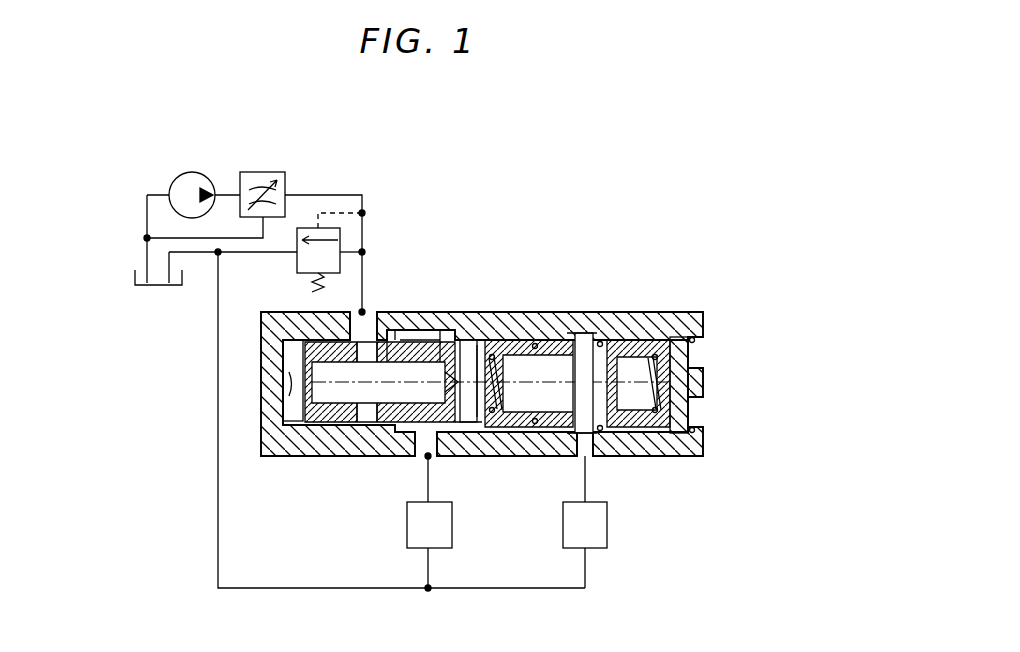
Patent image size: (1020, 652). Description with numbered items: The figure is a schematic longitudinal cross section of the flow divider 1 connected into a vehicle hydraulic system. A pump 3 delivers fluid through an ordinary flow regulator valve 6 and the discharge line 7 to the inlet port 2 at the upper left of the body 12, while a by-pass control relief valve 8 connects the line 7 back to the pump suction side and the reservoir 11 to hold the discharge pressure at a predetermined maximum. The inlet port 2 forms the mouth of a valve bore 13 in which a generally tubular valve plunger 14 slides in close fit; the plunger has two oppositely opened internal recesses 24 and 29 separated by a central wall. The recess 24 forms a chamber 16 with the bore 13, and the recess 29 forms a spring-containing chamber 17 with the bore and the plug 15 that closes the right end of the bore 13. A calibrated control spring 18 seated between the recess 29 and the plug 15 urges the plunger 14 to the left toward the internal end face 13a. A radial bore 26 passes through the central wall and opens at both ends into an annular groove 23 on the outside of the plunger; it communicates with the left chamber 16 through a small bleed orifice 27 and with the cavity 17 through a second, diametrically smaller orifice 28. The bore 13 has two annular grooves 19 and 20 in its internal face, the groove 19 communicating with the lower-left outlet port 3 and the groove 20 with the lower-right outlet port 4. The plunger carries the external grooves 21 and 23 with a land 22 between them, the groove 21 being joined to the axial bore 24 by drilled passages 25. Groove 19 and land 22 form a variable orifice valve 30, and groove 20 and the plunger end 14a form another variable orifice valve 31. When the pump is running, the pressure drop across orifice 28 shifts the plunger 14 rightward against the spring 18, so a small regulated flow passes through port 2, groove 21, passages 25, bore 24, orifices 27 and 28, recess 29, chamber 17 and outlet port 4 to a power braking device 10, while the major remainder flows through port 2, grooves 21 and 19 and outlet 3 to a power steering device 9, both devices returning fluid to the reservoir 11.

The flow divider 1 is at (597, 272).
The inlet port 2 is at (368, 325).
The outlet port 3 is at (190, 172).
The outlet port 4 is at (583, 452).
The flow regulator valve 6 is at (262, 172).
The pump discharge line 7 is at (330, 195).
The by-pass control relief valve 8 is at (301, 261).
The manually controllable and fluidly actuatable system 9 is at (452, 535).
The similar device 10 is at (607, 535).
The reservoir 11 is at (141, 273).
The body 12 is at (698, 312).
The valve bore 13 is at (508, 330).
The internal end face of the bore 13a is at (283, 423).
The valve plunger 14 is at (535, 340).
The end of the plunger 14a is at (600, 340).
The plug 15 is at (690, 353).
The chamber 16 is at (293, 407).
The chamber 17 is at (636, 380).
The calibrated control spring 18 is at (691, 410).
The annular groove 19 is at (423, 330).
The annular groove 20 is at (583, 335).
The annular groove 21 is at (390, 340).
The land 22 is at (440, 337).
The annular groove 23 is at (468, 336).
The recess 24 is at (380, 382).
The passages 25 is at (367, 410).
The radial bore 26 is at (471, 425).
The bleed orifice 27 is at (454, 382).
The second orifice 28 is at (488, 389).
The recess 29 is at (490, 385).
The variable orifice valve 30 is at (407, 335).
The variable orifice valve 31 is at (589, 460).